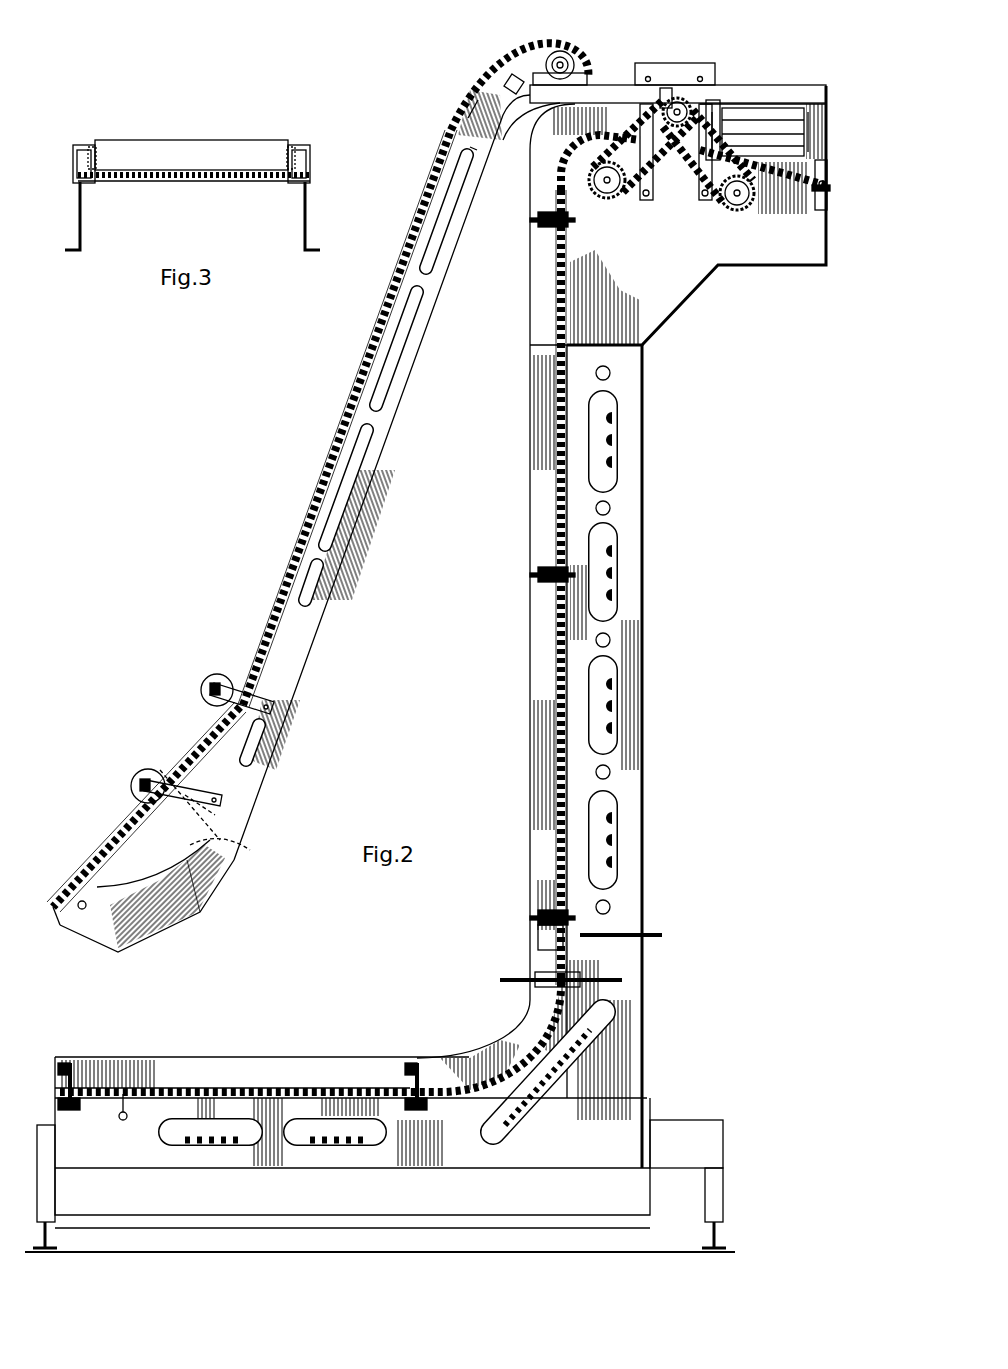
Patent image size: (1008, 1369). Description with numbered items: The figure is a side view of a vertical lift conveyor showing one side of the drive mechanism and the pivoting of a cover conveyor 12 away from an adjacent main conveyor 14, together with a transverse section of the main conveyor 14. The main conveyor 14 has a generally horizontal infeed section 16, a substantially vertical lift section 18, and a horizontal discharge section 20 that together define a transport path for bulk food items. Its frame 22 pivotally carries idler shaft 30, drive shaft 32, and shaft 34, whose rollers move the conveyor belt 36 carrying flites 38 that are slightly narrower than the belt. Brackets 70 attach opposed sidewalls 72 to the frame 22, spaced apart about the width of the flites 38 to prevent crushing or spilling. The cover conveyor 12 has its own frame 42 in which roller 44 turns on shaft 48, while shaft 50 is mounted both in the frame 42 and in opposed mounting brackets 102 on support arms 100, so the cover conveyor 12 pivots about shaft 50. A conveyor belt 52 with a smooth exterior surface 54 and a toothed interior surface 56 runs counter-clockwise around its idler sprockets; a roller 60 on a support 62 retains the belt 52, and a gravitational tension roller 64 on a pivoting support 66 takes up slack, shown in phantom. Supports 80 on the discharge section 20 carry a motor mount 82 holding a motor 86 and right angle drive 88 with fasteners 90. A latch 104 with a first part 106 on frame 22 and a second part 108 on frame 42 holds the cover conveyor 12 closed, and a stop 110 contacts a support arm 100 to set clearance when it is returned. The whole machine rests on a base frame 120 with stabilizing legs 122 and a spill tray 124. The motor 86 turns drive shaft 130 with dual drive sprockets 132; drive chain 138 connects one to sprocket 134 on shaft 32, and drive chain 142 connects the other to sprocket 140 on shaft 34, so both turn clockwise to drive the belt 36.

In FIG. 2, the cover conveyor 12 is at (300, 495).
In FIG. 2, the main conveyor 14 is at (645, 432).
In FIG. 2, the infeed section 16 is at (185, 1088).
In FIG. 2, the lift section 18 is at (568, 500).
In FIG. 2, the discharge section 20 is at (760, 250).
In FIG. 3, the frame 22 is at (75, 218).
In FIG. 2, the frame 22 is at (640, 630).
In FIG. 2, the idler shaft 30 is at (120, 1110).
In FIG. 2, the drive shaft 32 is at (604, 198).
In FIG. 2, the shaft 34 is at (737, 210).
In FIG. 3, the conveyor belt 36 is at (148, 180).
In FIG. 2, the conveyor belt 36 is at (620, 848).
In FIG. 3, the flites 38 is at (172, 140).
In FIG. 2, the flites 38 is at (655, 728).
In FIG. 2, the frame 42 is at (385, 468).
In FIG. 2, the roller 44 is at (50, 895).
In FIG. 2, the shaft 48 is at (85, 912).
In FIG. 2, the shaft 50 is at (525, 48).
In FIG. 2, the conveyor belt 52 is at (92, 850).
In FIG. 2, the exterior surface 54 is at (265, 600).
In FIG. 2, the interior surface 56 is at (378, 330).
In FIG. 2, the roller 60 is at (200, 690).
In FIG. 2, the support 62 is at (238, 665).
In FIG. 2, the gravitational tension roller 64 is at (125, 795).
In FIG. 2, the support 66 is at (185, 775).
In FIG. 3, the bracket 70 is at (72, 152).
In FIG. 2, the bracket 70 is at (536, 222).
In FIG. 3, the sidewalls 72 is at (92, 145).
In FIG. 2, the sidewalls 72 is at (528, 672).
In FIG. 2, the supports 80 is at (655, 190).
In FIG. 2, the motor mount 82 is at (690, 63).
In FIG. 2, the motor 86 is at (780, 108).
In FIG. 2, the right angle drive 88 is at (710, 104).
In FIG. 2, the fasteners 90 is at (705, 62).
In FIG. 2, the support arms 100 is at (600, 86).
In FIG. 2, the mounting brackets 102 is at (578, 62).
In FIG. 2, the latch 104 is at (630, 963).
In FIG. 2, the first part 106 is at (625, 982).
In FIG. 2, the second part 108 is at (180, 925).
In FIG. 2, the stop 110 is at (505, 75).
In FIG. 2, the base frame 120 is at (690, 1120).
In FIG. 2, the stabilizing legs 122 is at (45, 1125).
In FIG. 2, the spill tray 124 is at (645, 1195).
In FIG. 2, the drive shaft 130 is at (680, 98).
In FIG. 2, the dual drive sprockets 132 is at (668, 90).
In FIG. 2, the sprocket 134 is at (630, 185).
In FIG. 2, the drive chain 138 is at (558, 165).
In FIG. 2, the sprocket 140 is at (745, 208).
In FIG. 2, the drive chain 142 is at (720, 200).